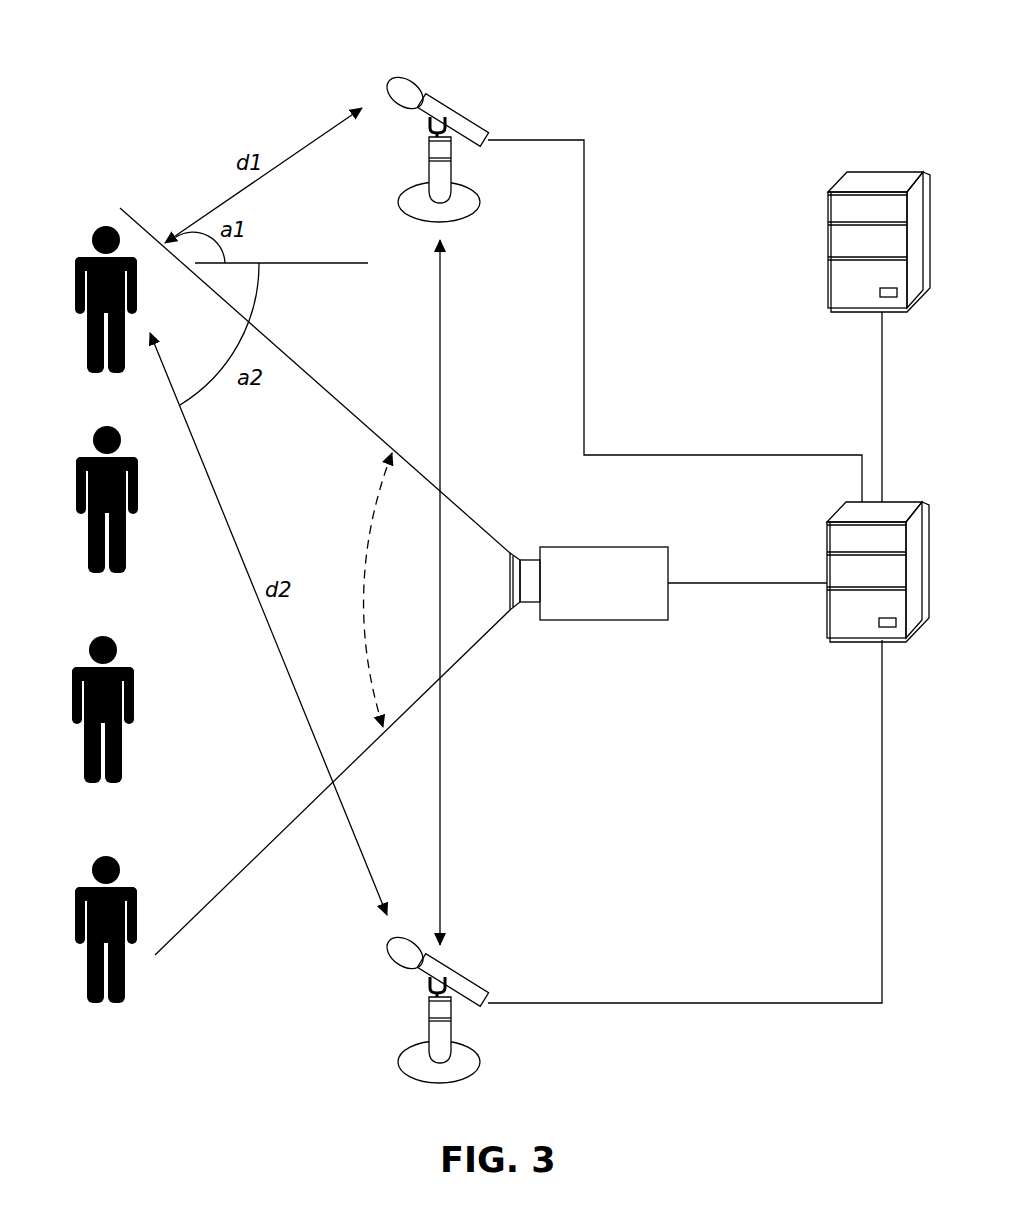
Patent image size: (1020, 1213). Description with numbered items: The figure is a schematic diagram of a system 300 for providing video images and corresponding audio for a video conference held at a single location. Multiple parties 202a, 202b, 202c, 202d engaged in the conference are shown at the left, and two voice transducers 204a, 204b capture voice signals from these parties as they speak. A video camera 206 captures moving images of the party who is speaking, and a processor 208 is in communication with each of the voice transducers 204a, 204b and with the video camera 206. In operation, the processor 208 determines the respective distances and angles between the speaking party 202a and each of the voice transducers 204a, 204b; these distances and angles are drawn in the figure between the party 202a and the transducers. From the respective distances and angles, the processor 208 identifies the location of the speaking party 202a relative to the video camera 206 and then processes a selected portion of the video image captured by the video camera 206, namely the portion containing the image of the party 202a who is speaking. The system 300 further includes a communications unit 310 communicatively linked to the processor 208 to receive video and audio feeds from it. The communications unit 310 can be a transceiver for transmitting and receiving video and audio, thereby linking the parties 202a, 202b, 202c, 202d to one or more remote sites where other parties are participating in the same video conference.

The system 300 is at (757, 31).
The party 202a is at (138, 308).
The party 202b is at (137, 505).
The party 202c is at (135, 670).
The party 202d is at (138, 890).
The voice transducer 204a is at (480, 200).
The voice transducer 204b is at (478, 1058).
The video camera 206 is at (635, 620).
The processor 208 is at (827, 537).
The communications unit 310 is at (827, 232).